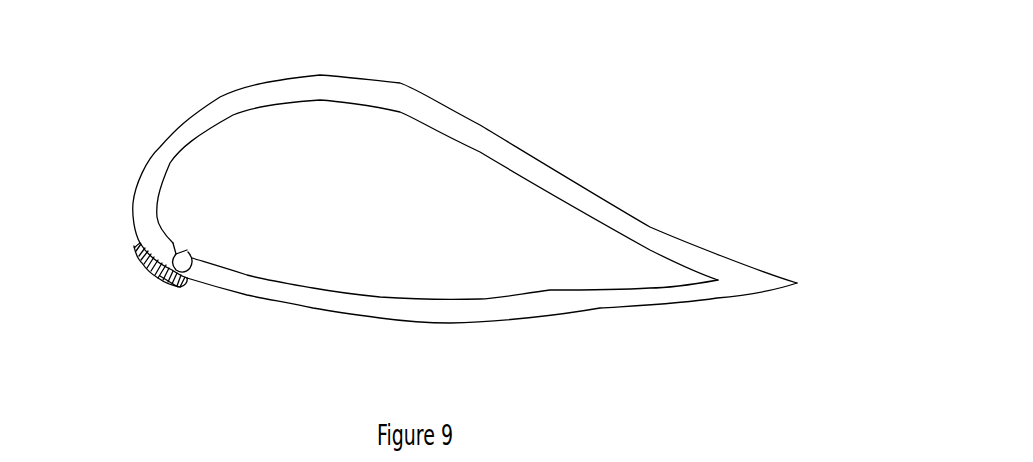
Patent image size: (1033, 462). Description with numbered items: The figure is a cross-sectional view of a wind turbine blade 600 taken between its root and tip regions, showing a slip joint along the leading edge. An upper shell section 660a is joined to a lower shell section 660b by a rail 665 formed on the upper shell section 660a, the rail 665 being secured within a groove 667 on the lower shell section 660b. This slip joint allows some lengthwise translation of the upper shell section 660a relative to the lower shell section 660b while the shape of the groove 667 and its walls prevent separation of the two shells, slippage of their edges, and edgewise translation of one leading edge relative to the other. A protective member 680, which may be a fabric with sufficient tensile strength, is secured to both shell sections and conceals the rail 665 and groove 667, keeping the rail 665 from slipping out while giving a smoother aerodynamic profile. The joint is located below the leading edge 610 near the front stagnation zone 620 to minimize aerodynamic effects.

The blade 600 is at (426, 208).
The leading edge 610 is at (426, 208).
The front stagnation zone 620 is at (162, 308).
The upper shell section 660a is at (415, 75).
The lower shell section 660b is at (388, 337).
The rail 665 is at (187, 260).
The groove 667 is at (175, 247).
The protective member 680 is at (150, 270).